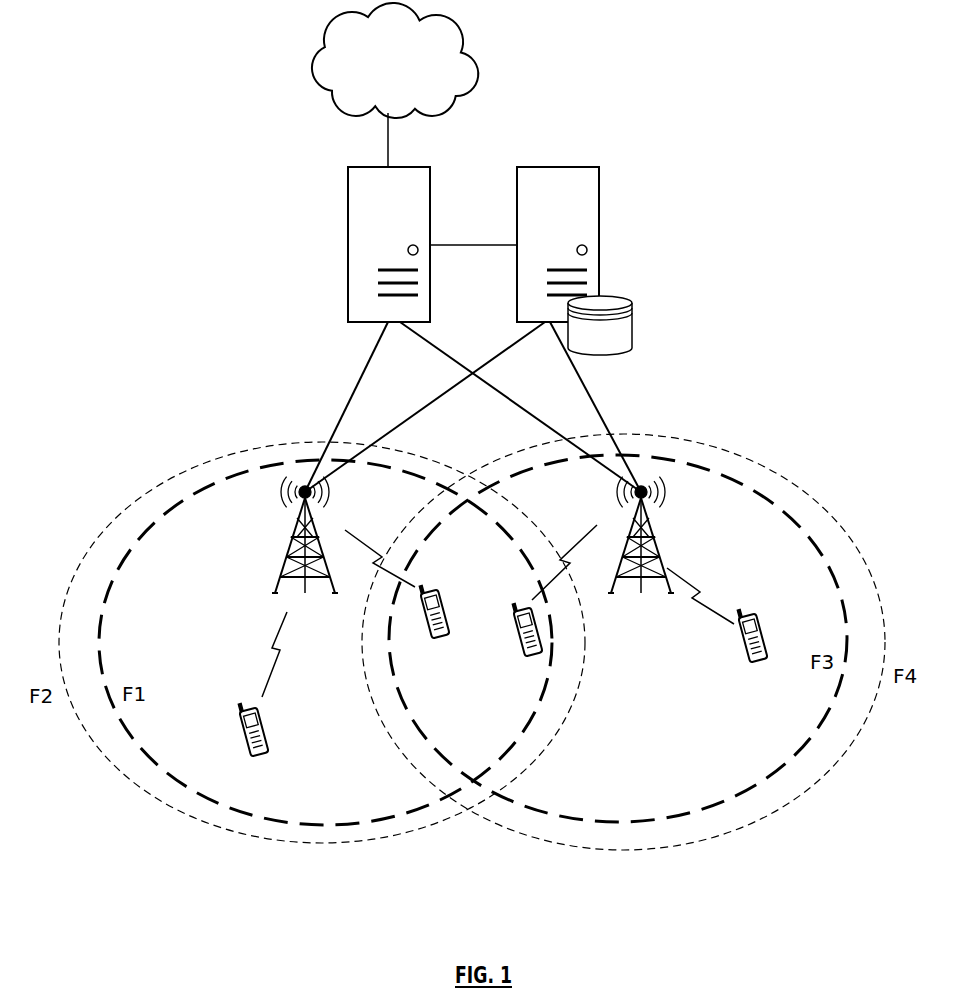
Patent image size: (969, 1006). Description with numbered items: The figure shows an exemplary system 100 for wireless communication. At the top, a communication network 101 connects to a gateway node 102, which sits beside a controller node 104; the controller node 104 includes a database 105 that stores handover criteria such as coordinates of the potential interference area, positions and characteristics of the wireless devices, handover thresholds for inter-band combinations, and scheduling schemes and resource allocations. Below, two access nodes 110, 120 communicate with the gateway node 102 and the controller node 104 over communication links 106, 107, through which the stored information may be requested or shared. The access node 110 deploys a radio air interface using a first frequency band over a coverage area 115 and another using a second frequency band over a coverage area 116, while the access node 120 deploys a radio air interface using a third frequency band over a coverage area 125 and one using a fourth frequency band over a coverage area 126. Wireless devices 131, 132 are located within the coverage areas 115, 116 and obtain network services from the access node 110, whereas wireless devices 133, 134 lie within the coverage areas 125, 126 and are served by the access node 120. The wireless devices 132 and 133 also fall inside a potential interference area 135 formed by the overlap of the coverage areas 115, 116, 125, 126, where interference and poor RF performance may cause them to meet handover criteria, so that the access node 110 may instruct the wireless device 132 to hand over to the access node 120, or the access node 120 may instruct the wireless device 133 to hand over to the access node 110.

The system 100 is at (566, 80).
The communication network 101 is at (372, 71).
The gateway node 102 is at (347, 206).
The controller node 104 is at (599, 226).
The database 105 is at (633, 324).
The communication link 106 is at (452, 362).
The communication link 107 is at (418, 413).
The access node 110 is at (288, 566).
The coverage area 115 is at (340, 826).
The coverage area 116 is at (170, 806).
The access node 120 is at (662, 567).
The coverage area 125 is at (609, 823).
The coverage area 126 is at (741, 829).
The wireless device 131 is at (252, 772).
The wireless device 132 is at (424, 646).
The wireless device 133 is at (530, 672).
The wireless device 134 is at (762, 664).
The potential interference area 135 is at (473, 747).